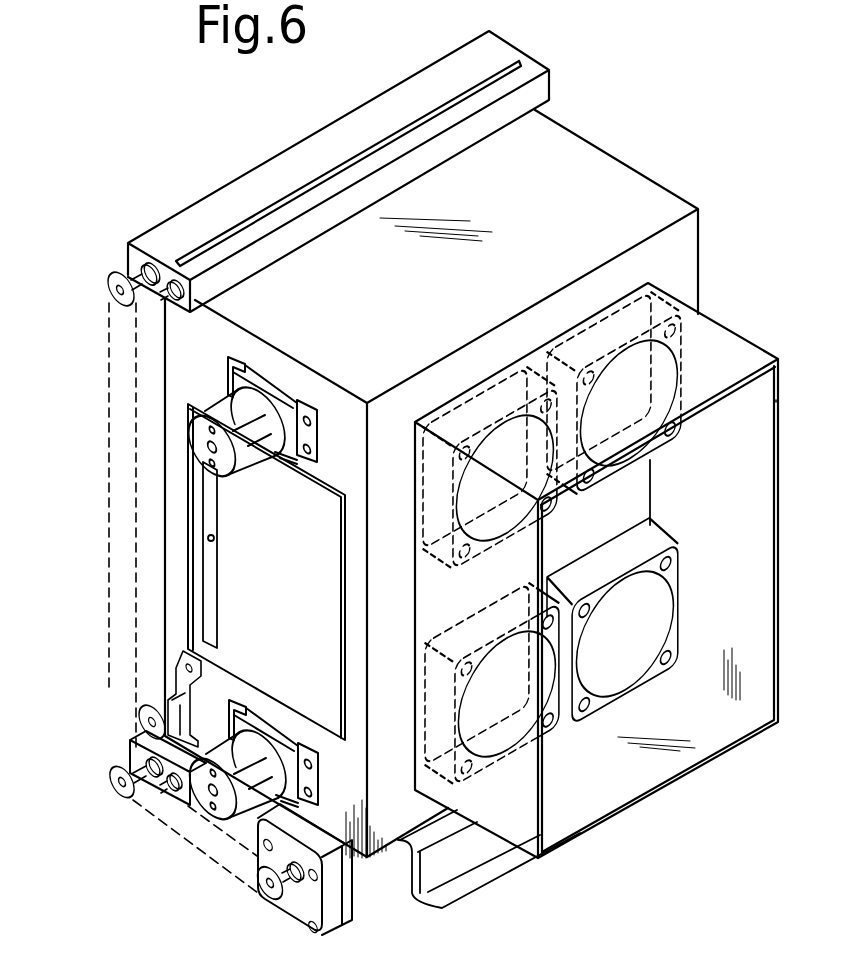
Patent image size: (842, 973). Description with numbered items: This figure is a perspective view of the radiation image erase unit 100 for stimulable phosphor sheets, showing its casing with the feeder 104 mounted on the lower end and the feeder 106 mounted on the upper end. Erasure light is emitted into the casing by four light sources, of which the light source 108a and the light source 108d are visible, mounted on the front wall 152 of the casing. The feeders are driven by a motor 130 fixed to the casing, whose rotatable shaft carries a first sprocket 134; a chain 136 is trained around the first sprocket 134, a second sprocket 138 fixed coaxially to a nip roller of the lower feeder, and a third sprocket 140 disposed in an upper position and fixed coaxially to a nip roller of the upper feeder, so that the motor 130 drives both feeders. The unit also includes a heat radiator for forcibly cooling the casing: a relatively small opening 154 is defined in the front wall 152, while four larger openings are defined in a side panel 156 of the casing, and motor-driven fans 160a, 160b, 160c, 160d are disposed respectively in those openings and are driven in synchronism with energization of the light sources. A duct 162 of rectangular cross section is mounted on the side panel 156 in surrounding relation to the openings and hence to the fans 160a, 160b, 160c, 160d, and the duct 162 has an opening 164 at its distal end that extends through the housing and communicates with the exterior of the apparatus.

The radiation image erase unit 100 is at (643, 167).
The feeder 104 is at (129, 752).
The feeder 106 is at (203, 194).
The light source 108a is at (230, 410).
The light source 108d is at (253, 750).
The motor 130 is at (333, 913).
The first sprocket 134 is at (265, 897).
The chain 136 is at (185, 840).
The second sprocket 138 is at (113, 778).
The third sprocket 140 is at (108, 280).
The front wall 152 is at (250, 520).
The opening 154 is at (210, 539).
The side panel 156 is at (680, 258).
The motor-driven fan 160a is at (485, 403).
The motor-driven fan 160b is at (603, 337).
The motor-driven fan 160c is at (680, 620).
The motor-driven fan 160d is at (560, 733).
The duct 162 is at (729, 319).
The opening 164 is at (780, 657).